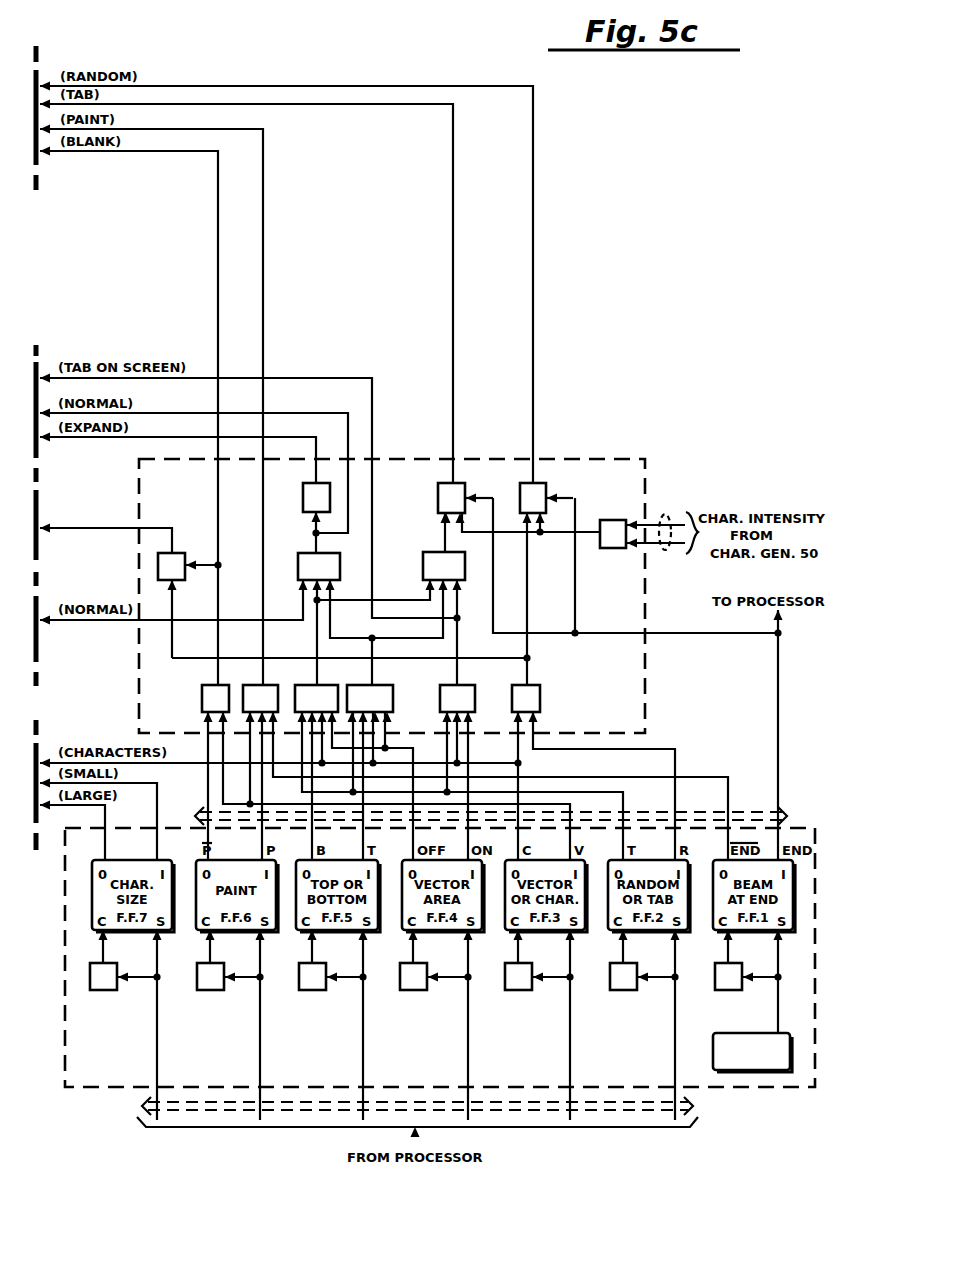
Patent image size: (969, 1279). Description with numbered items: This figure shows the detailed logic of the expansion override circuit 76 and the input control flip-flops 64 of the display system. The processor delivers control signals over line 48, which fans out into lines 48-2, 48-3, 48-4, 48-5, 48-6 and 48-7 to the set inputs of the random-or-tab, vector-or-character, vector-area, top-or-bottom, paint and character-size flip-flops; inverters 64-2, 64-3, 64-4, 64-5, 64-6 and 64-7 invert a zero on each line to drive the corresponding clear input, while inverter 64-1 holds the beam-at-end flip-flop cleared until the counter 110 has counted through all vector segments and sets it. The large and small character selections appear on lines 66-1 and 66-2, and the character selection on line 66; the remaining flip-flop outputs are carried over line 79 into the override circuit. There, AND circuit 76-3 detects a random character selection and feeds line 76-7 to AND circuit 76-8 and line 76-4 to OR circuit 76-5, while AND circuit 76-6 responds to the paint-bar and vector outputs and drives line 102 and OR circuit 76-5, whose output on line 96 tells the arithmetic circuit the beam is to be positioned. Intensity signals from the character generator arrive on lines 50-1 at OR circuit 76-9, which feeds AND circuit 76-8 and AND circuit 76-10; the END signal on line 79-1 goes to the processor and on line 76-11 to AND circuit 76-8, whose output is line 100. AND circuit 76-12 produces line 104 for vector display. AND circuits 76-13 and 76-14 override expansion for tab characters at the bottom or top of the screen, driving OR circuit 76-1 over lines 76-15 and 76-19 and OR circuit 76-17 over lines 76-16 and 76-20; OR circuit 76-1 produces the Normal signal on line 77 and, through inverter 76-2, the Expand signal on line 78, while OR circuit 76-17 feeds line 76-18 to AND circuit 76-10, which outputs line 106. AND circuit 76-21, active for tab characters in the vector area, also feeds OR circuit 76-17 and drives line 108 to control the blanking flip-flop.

The line 100 is at (533, 219).
The line 102 is at (218, 219).
The line 104 is at (263, 219).
The line 106 is at (453, 219).
The line 108 is at (300, 378).
The Normal line 77 is at (168, 413).
The Expand line 78 is at (168, 437).
The expansion override circuit 76 is at (612, 459).
The line 96 is at (56, 528).
The intensity control lines 50-1 is at (665, 514).
The OR circuit 76-1 is at (298, 560).
The inverter 76-2 is at (303, 490).
The AND circuit 76-3 is at (540, 689).
The line 76-4 is at (175, 658).
The OR circuit 76-5 is at (183, 553).
The AND circuit 76-6 is at (237, 680).
The line 76-7 is at (527, 606).
The AND circuit 76-8 is at (547, 491).
The OR circuit 76-9 is at (613, 520).
The AND circuit 76-10 is at (466, 491).
The line 76-11 is at (575, 616).
The AND circuit 76-12 is at (286, 681).
The AND circuit 76-13 is at (345, 681).
The AND circuit 76-14 is at (400, 681).
The line 76-15 is at (317, 633).
The line 76-16 is at (398, 600).
The OR circuit 76-17 is at (423, 556).
The line 76-18 is at (445, 533).
The line 76-19 is at (331, 632).
The line 76-20 is at (384, 639).
The AND circuit 76-21 is at (483, 681).
The line 79 is at (785, 816).
The line 79-1 is at (778, 660).
The character line 66 is at (166, 762).
The line 66-1 is at (105, 818).
The line 66-2 is at (140, 783).
The input control flip-flops 64 is at (65, 906).
The inverter 64-1 is at (723, 990).
The inverter 64-2 is at (618, 990).
The inverter 64-3 is at (513, 990).
The inverter 64-4 is at (408, 990).
The inverter 64-5 is at (307, 990).
The inverter 64-6 is at (205, 990).
The inverter 64-7 is at (98, 990).
The line 48 is at (692, 1105).
The line 48-2 is at (675, 1053).
The line 48-3 is at (570, 1053).
The line 48-4 is at (468, 1053).
The line 48-5 is at (363, 1053).
The line 48-6 is at (260, 1053).
The line 48-7 is at (157, 1053).
The counter 110 is at (713, 1033).